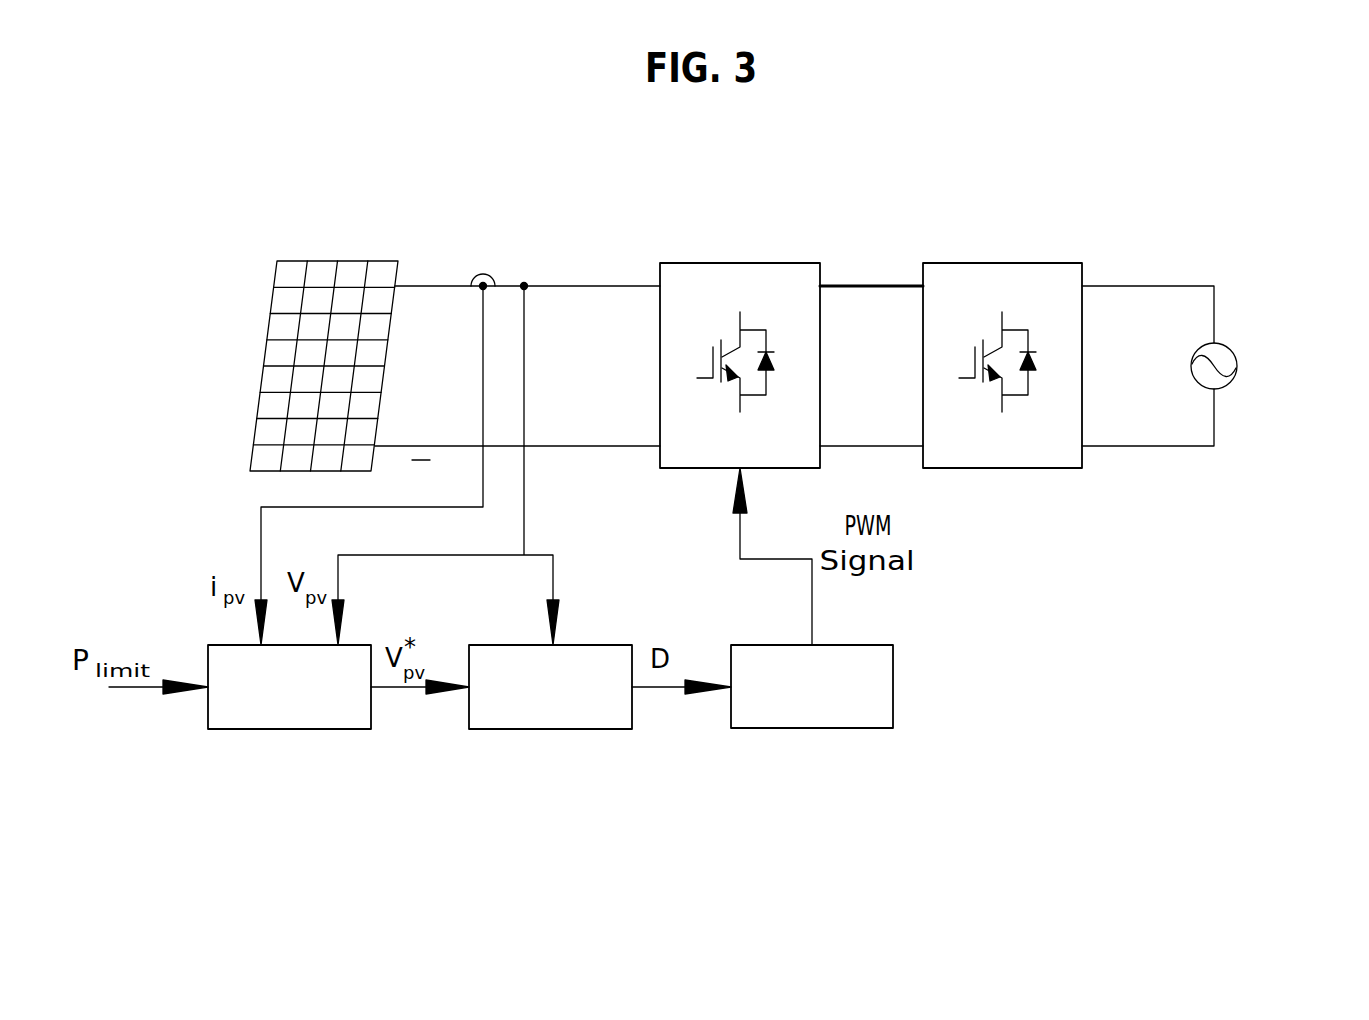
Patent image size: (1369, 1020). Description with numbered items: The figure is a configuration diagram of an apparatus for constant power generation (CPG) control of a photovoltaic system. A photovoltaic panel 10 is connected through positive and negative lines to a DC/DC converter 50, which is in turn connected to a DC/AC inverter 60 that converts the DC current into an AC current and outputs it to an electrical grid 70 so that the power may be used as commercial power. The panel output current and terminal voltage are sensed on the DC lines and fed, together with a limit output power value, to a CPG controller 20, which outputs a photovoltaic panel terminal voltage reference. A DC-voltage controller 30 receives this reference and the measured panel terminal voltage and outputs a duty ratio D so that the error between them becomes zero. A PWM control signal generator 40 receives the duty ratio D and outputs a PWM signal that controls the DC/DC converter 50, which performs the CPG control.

The photovoltaic panel 10 is at (277, 353).
The CPG controller 20 is at (290, 729).
The DC-voltage controller 30 is at (552, 729).
The PWM control signal generator 40 is at (812, 728).
The DC/DC converter 50 is at (692, 468).
The DC/AC inverter 60 is at (1002, 468).
The electrical grid 70 is at (1232, 363).